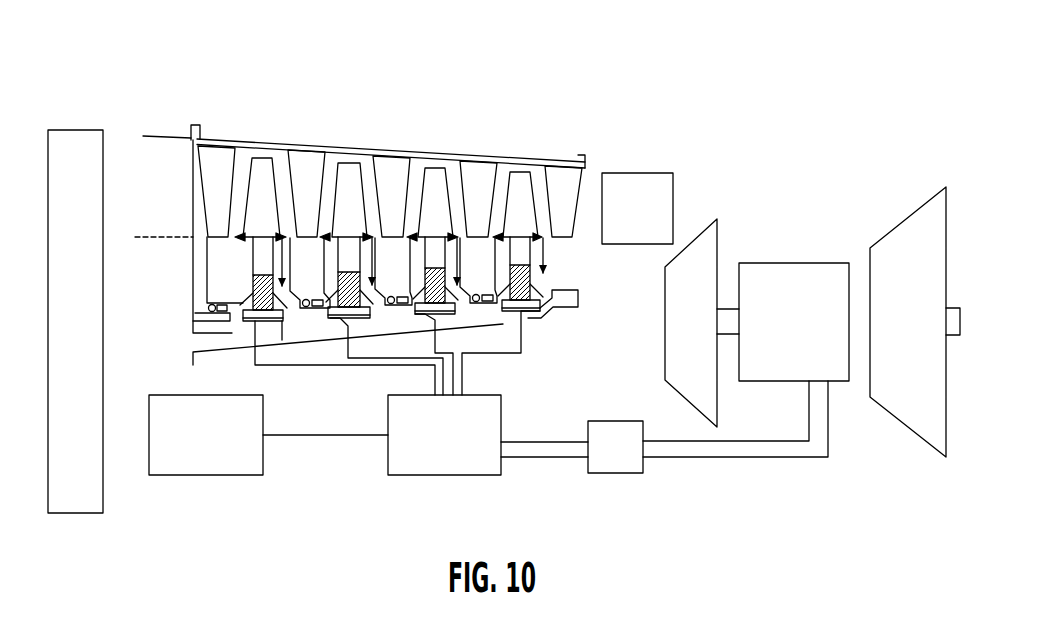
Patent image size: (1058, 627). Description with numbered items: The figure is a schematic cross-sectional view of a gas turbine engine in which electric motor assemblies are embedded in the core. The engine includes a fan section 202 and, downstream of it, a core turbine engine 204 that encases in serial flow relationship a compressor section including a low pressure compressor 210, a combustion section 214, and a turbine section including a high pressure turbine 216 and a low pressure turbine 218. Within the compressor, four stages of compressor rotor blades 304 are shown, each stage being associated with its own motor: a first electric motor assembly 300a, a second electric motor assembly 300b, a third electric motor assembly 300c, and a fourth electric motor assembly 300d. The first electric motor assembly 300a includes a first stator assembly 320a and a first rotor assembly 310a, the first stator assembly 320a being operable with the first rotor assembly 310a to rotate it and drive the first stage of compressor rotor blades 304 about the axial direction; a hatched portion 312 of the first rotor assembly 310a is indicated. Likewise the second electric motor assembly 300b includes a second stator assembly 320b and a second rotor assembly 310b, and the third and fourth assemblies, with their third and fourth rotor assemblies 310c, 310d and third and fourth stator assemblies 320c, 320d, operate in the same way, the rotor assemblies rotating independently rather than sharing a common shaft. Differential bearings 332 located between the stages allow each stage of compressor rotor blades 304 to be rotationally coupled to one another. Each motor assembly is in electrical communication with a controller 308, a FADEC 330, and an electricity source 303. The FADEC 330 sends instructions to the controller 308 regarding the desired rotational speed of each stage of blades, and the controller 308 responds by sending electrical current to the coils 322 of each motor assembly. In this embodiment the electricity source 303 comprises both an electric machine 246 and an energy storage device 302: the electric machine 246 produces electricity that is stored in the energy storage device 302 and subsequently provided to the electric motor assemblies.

The fan section 202 is at (78, 130).
The core turbine engine 204 is at (200, 88).
The low pressure compressor 210 is at (516, 70).
The combustion section 214 is at (636, 173).
The high pressure turbine 216 is at (662, 332).
The low pressure turbine 218 is at (912, 212).
The electric machine 246 is at (770, 263).
The first electric motor assembly 300a is at (286, 234).
The second electric motor assembly 300b is at (373, 234).
The third electric motor assembly 300c is at (451, 234).
The fourth electric motor assembly 300d is at (543, 234).
The energy storage device 302 is at (597, 473).
The electricity source 303 is at (617, 421).
The compressor rotor blades 304 is at (262, 157).
The controller 308 is at (445, 475).
The first rotor assembly 310a is at (240, 290).
The second rotor assembly 310b is at (326, 285).
The third rotor assembly 310c is at (411, 284).
The fourth rotor assembly 310d is at (497, 284).
The rotor disk 312 is at (262, 275).
The first stator assembly 320a is at (232, 330).
The second stator assembly 320b is at (330, 332).
The third stator assembly 320c is at (422, 327).
The fourth stator assembly 320d is at (499, 324).
The coils 322 is at (292, 322).
The FADEC 330 is at (208, 475).
The differential bearings 332 is at (313, 310).